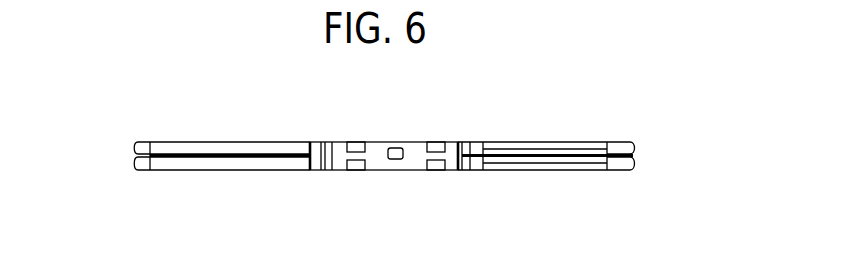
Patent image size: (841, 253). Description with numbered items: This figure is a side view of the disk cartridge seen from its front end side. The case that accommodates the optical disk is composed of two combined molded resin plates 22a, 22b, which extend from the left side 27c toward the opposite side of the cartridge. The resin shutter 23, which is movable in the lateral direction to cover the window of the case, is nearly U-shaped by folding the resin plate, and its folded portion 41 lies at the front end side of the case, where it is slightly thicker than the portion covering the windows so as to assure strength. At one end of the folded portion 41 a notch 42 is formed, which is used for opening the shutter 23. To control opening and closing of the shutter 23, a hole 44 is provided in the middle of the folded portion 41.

The left side 27c is at (133, 150).
The notch 42 is at (327, 143).
The folded portion 41 is at (375, 145).
The shutter 23 is at (379, 156).
The hole 44 is at (400, 158).
The resin plate 22b is at (633, 144).
The resin plate 22a is at (633, 168).